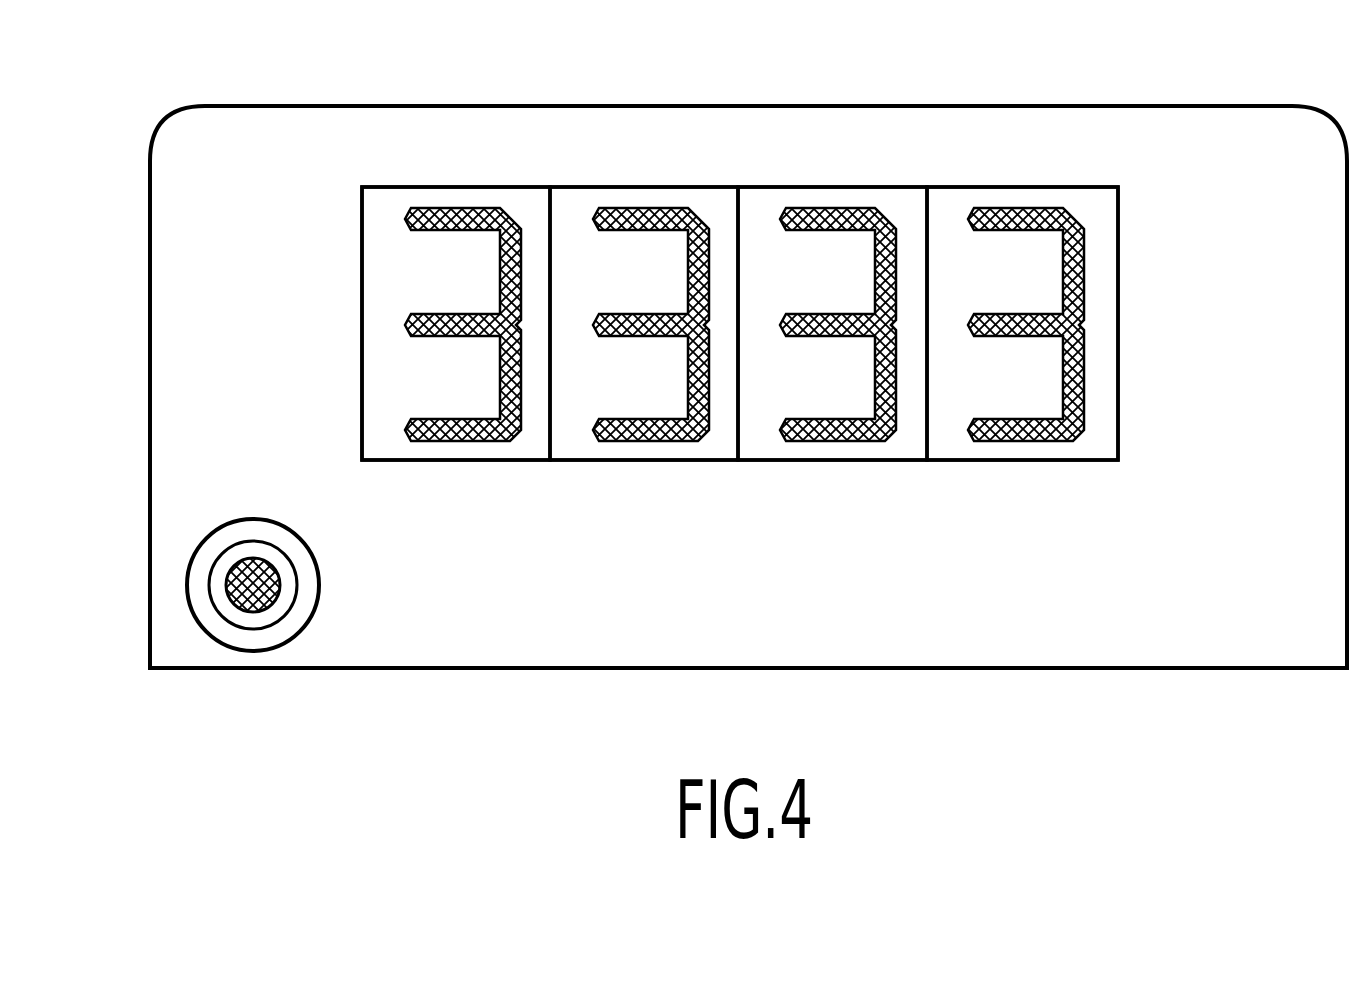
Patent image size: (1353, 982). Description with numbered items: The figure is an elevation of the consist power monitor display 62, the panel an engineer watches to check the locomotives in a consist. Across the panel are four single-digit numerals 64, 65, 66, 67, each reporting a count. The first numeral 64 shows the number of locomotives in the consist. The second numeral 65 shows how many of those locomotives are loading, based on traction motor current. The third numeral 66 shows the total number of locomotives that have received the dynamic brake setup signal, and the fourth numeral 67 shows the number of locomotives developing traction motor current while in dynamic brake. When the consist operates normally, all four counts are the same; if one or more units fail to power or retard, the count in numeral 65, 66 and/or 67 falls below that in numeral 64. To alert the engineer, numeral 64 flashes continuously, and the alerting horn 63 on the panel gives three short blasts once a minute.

The consist power monitor display 62 is at (937, 106).
The alerting horn 63 is at (310, 618).
The numeral showing number of locomotives in the consist 64 is at (361, 312).
The numeral showing number of locomotives loading 65 is at (553, 461).
The numeral showing number of locomotives that received dynamic brake setup signal 66 is at (757, 461).
The numeral showing number of locomotives developing traction motor current in dynam 67 is at (1118, 343).